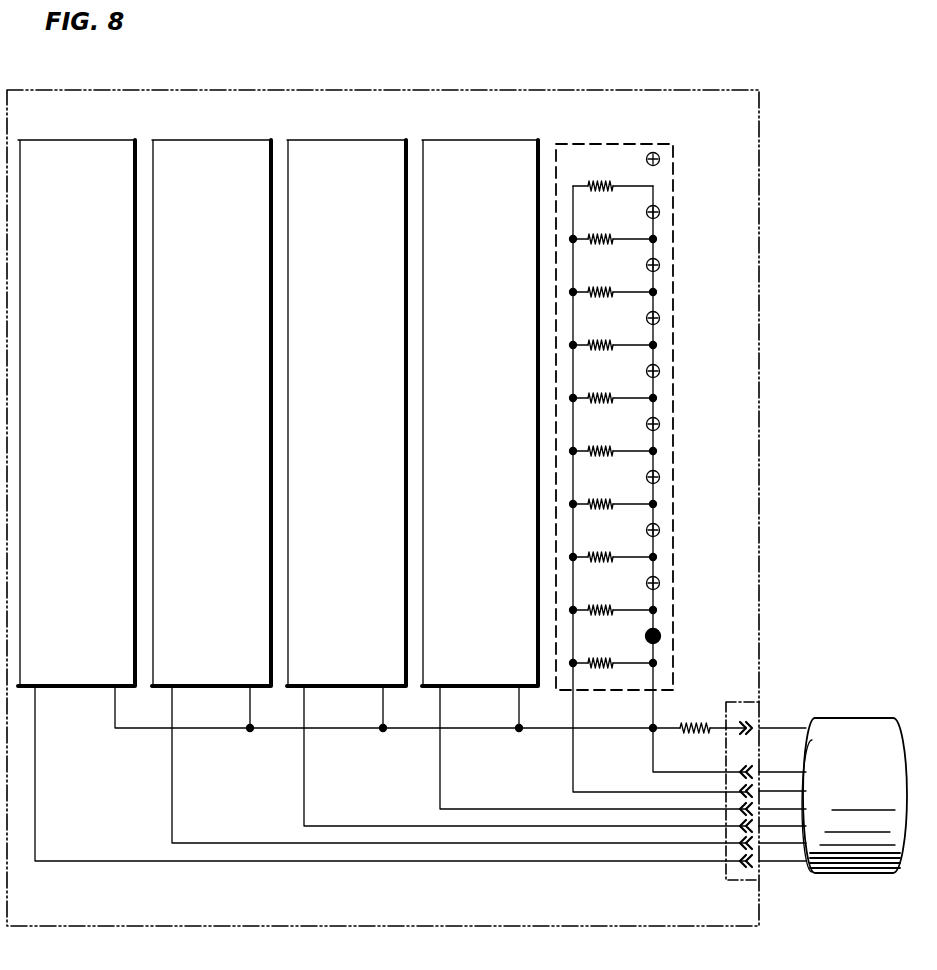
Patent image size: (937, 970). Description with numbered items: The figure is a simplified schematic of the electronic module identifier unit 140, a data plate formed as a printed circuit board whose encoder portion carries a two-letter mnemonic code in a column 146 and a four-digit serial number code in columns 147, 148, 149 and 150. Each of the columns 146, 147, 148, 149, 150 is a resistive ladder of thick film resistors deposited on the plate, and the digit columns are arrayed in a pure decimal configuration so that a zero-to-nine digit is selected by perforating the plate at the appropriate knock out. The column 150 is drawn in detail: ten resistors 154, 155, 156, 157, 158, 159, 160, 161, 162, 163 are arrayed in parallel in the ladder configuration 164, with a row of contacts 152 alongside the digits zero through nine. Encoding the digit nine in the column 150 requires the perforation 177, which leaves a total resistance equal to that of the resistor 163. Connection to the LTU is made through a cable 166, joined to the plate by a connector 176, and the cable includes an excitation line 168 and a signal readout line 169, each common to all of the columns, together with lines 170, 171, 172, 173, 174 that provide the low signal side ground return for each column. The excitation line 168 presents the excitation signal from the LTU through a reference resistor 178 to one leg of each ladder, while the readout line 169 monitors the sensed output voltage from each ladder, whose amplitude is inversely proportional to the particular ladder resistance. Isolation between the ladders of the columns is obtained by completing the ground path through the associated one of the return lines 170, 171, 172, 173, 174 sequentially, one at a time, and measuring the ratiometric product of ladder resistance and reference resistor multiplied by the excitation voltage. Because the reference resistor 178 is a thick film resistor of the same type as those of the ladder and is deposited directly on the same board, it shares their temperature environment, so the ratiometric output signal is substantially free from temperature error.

The electronic module identifier unit 140 is at (420, 88).
The mnemonic code column 146 is at (62, 143).
The serial number code column 147 is at (196, 143).
The serial number code column 148 is at (331, 143).
The serial number code column 149 is at (466, 143).
The serial number code column 150 is at (600, 144).
The digit contacts 152 is at (660, 268).
The resistor 154 is at (592, 185).
The resistor 155 is at (592, 238).
The resistor 156 is at (592, 291).
The resistor 157 is at (592, 344).
The resistor 158 is at (592, 397).
The resistor 159 is at (592, 450).
The resistor 160 is at (592, 503).
The resistor 161 is at (592, 556).
The resistor 162 is at (592, 609).
The resistor 163 is at (592, 662).
The ladder configuration 164 is at (660, 182).
The cable 166 is at (854, 795).
The excitation line 168 is at (776, 740).
The signal readout line 169 is at (768, 778).
The ground return line 170 is at (772, 791).
The ground return line 171 is at (776, 800).
The ground return line 172 is at (776, 819).
The ground return line 173 is at (782, 848).
The ground return line 174 is at (800, 870).
The connector 176 is at (752, 882).
The perforation 177 is at (660, 632).
The reference resistor 178 is at (699, 716).